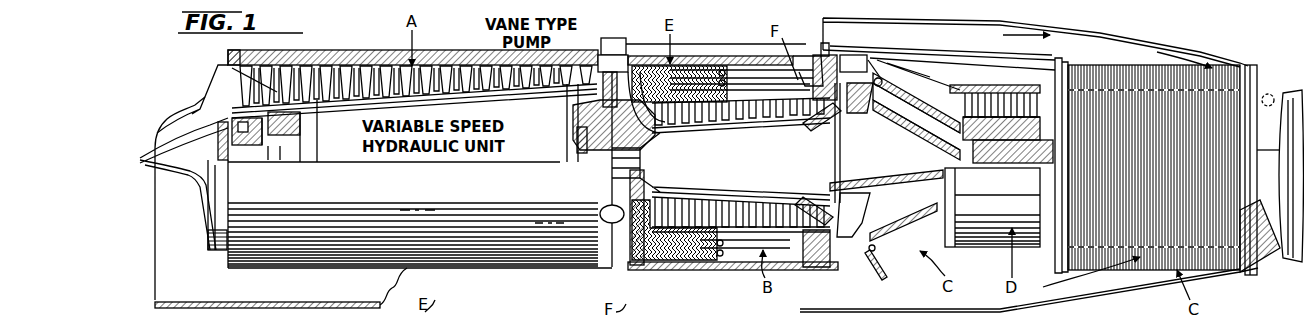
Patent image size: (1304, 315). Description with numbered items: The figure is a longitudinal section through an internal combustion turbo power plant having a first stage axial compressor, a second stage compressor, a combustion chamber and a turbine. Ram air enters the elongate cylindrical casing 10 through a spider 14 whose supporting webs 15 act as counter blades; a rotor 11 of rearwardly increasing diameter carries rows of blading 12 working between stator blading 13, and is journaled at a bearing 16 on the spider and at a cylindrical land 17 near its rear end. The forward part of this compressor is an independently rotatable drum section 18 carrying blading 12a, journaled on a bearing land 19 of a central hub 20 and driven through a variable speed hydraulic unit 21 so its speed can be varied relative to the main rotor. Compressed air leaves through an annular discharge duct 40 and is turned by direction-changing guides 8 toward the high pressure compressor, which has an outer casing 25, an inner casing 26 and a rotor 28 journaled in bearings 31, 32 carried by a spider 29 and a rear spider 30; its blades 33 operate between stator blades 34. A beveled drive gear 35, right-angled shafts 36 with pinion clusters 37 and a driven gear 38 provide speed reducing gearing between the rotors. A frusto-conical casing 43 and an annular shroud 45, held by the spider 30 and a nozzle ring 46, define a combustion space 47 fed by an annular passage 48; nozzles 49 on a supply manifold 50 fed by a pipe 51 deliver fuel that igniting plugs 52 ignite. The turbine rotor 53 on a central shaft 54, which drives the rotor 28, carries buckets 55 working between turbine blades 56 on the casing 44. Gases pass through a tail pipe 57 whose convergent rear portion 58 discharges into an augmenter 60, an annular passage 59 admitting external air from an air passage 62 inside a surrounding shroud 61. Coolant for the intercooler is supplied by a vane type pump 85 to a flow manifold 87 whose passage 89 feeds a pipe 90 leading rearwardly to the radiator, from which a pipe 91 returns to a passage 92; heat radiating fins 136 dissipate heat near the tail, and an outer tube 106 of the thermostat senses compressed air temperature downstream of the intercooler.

The direction-changing guides 8 is at (281, 291).
The casing 10 is at (390, 50).
The rotor 11 is at (482, 72).
The blading 12 is at (345, 81).
The blading 12a is at (231, 52).
The stator blading 13 is at (440, 75).
The spider 14 is at (168, 129).
The supporting webs 15 is at (217, 92).
The bearing 16 is at (228, 160).
The cylindrical land 17 is at (572, 160).
The drum section 18 is at (296, 115).
The bearing land 19 is at (276, 160).
The central hub 20 is at (244, 160).
The variable speed hydraulic unit 21 is at (236, 129).
The outer casing 25 is at (705, 58).
The inner casing 26 is at (778, 230).
The rotor 28 is at (740, 123).
The spider 29 is at (605, 95).
The spider 30 is at (810, 133).
The bearing 31 is at (648, 180).
The bearing 32 is at (810, 193).
The blades 33 is at (678, 130).
The stator blades 34 is at (740, 202).
The beveled drive gear 35 is at (610, 188).
The right-angled shafts 36 is at (600, 62).
The pinion clusters 37 is at (586, 155).
The driven gear 38 is at (578, 135).
The discharge duct 40 is at (606, 60).
The casing 43 is at (934, 100).
The casing 44 is at (1010, 87).
The shroud 45 is at (900, 110).
The nozzle ring 46 is at (970, 98).
The combustion space 47 is at (912, 74).
The passage 48 is at (818, 270).
The nozzles 49 is at (883, 254).
The supply manifold 50 is at (872, 252).
The pipe 51 is at (888, 72).
The igniting plugs 52 is at (920, 70).
The rotor 53 is at (1023, 148).
The central shaft 54 is at (887, 217).
The buckets 55 is at (1013, 115).
The turbine blades 56 is at (1043, 98).
The tail pipe 57 is at (1048, 247).
The convergent rear portion 58 is at (1270, 94).
The annular passage 59 is at (1268, 155).
The augmenter 60 is at (1288, 257).
The shroud 61 is at (1148, 45).
The air passage 62 is at (1100, 56).
The pump 85 is at (612, 42).
The flow manifold 87 is at (740, 50).
The passage 89 is at (733, 288).
The pipe 90 is at (993, 84).
The pipe 91 is at (1046, 70).
The passage 92 is at (745, 277).
The outer tube 106 is at (706, 112).
The heat radiating fins 136 is at (1220, 270).